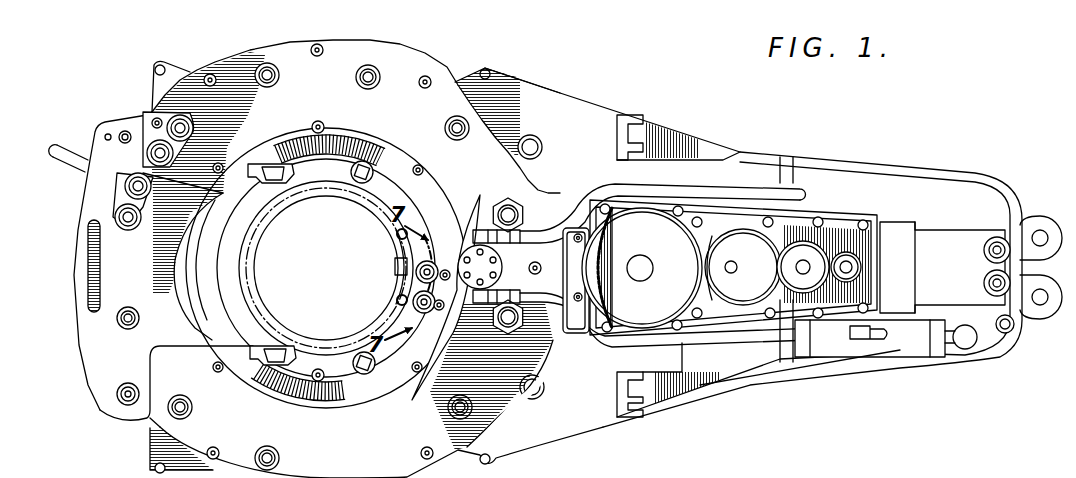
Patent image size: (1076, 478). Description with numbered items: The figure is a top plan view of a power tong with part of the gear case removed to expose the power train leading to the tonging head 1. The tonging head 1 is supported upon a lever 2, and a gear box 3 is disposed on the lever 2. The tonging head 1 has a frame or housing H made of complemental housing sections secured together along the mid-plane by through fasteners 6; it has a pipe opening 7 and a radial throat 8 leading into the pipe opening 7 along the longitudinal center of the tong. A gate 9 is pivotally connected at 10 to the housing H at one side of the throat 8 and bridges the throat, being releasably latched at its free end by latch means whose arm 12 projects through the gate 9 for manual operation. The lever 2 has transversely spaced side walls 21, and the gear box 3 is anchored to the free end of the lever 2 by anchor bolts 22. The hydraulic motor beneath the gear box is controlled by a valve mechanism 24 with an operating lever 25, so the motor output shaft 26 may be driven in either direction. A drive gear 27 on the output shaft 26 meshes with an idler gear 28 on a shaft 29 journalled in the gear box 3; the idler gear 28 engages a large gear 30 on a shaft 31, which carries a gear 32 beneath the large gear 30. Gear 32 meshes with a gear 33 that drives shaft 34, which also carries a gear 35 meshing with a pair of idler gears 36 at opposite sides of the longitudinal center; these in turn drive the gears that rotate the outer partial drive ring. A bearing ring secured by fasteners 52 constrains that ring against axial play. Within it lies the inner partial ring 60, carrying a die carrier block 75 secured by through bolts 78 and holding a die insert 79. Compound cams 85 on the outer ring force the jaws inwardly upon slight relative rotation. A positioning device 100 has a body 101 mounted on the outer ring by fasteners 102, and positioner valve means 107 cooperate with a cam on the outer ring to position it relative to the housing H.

The frame or housing H is at (405, 55).
The tonging head 1 is at (485, 140).
The lever 2 is at (895, 165).
The gear box 3 is at (822, 212).
The through fasteners 6 is at (210, 74).
The pipe opening 7 is at (195, 240).
The radial throat 8 is at (150, 345).
The gate 9 is at (72, 281).
The pivotal connection 10 is at (122, 397).
The latch arm 12 is at (76, 150).
The side walls 21 is at (793, 383).
The anchor bolts 22 is at (983, 282).
The valve mechanism 24 is at (908, 340).
The operating lever 25 is at (966, 350).
The motor output shaft 26 is at (858, 260).
The drive gear 27 is at (858, 273).
The idler gear 28 is at (802, 248).
The shaft 29 is at (810, 275).
The large gear 30 is at (724, 234).
The shaft 31 is at (731, 274).
The gear 32 is at (713, 300).
The gear 33 is at (660, 310).
The shaft 34 is at (643, 262).
The gear 35 is at (605, 262).
The idler gears 36 is at (598, 200).
The fasteners 52 is at (318, 121).
The inner partial ring 60 is at (340, 170).
The die carrier block 75 is at (393, 258).
The through bolts 78 is at (396, 234).
The die insert 79 is at (394, 268).
The compound cams 85 is at (262, 185).
The positioning device 100 is at (396, 288).
The body 101 is at (446, 268).
The fasteners 102 is at (463, 300).
The positioner valve means 107 is at (498, 276).